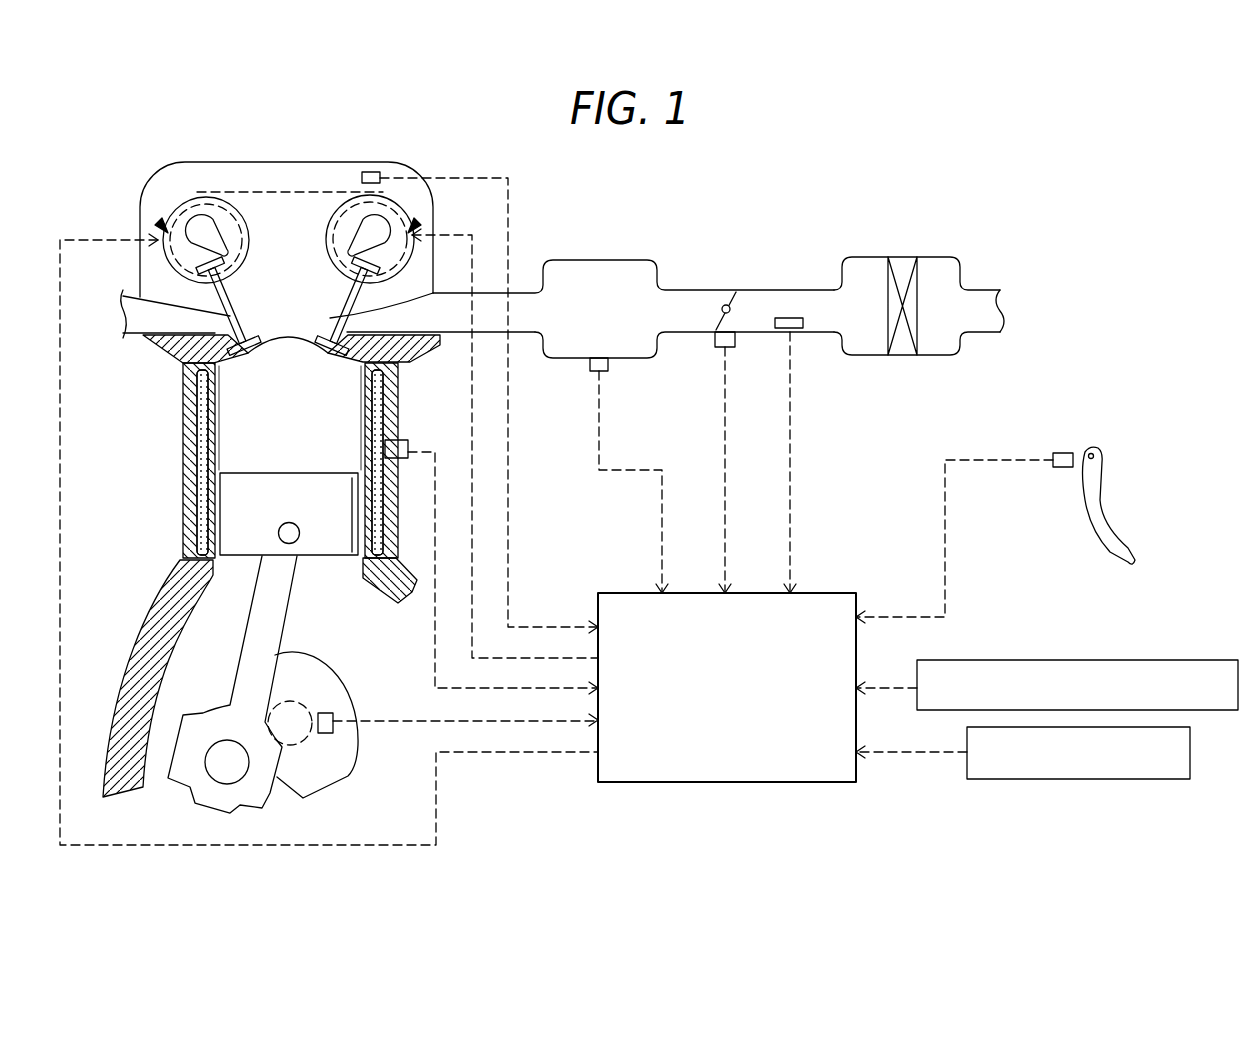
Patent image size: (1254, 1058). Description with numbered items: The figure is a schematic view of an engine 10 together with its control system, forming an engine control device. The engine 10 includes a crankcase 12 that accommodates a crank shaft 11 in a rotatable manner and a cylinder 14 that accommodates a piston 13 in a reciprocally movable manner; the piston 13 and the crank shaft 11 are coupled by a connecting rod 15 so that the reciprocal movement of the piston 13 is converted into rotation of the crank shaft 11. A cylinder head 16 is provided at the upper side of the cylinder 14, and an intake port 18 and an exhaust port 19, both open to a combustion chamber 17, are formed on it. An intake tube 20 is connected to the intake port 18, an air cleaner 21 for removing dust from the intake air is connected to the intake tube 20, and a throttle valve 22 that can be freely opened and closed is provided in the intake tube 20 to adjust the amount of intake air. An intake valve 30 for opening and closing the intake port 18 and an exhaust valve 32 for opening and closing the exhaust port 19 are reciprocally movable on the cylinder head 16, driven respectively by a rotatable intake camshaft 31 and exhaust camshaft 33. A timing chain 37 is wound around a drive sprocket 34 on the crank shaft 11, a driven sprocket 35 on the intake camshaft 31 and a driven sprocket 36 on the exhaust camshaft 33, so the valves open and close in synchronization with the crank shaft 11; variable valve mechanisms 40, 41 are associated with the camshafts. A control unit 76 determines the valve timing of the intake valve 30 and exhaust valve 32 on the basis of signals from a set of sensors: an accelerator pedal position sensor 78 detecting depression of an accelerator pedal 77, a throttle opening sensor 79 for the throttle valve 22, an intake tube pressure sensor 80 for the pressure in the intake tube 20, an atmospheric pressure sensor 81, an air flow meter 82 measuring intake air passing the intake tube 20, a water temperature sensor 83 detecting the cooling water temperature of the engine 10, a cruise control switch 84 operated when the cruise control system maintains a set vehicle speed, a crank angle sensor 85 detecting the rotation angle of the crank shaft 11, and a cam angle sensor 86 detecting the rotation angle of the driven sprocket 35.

The engine 10 is at (136, 176).
The crank shaft 11 is at (322, 775).
The crankcase 12 is at (138, 612).
The piston 13 is at (282, 472).
The cylinder 14 is at (182, 452).
The connecting rod 15 is at (233, 668).
The cylinder head 16 is at (152, 289).
The combustion chamber 17 is at (285, 342).
The intake port 18 is at (408, 318).
The exhaust port 19 is at (167, 350).
The intake tube 20 is at (620, 258).
The air cleaner 21 is at (910, 257).
The throttle valve 22 is at (735, 290).
The intake valve 30 is at (331, 362).
The intake camshaft 31 is at (355, 229).
The exhaust valve 32 is at (248, 362).
The exhaust camshaft 33 is at (223, 227).
The drive sprocket 34 is at (303, 705).
The driven sprocket 35 is at (332, 262).
The driven sprocket 36 is at (237, 197).
The timing chain 37 is at (282, 190).
The variable valve mechanism 40 is at (422, 224).
The variable valve mechanism 41 is at (154, 225).
The control unit 76 is at (828, 593).
The accelerator pedal 77 is at (1102, 500).
The accelerator pedal position sensor 78 is at (1060, 452).
The throttle opening sensor 79 is at (732, 350).
The intake tube pressure sensor 80 is at (605, 375).
The atmospheric pressure sensor 81 is at (1165, 780).
The air flow meter 82 is at (797, 330).
The water temperature sensor 83 is at (410, 442).
The cruise control switch 84 is at (1178, 660).
The crank angle sensor 85 is at (337, 718).
The cam angle sensor 86 is at (371, 171).